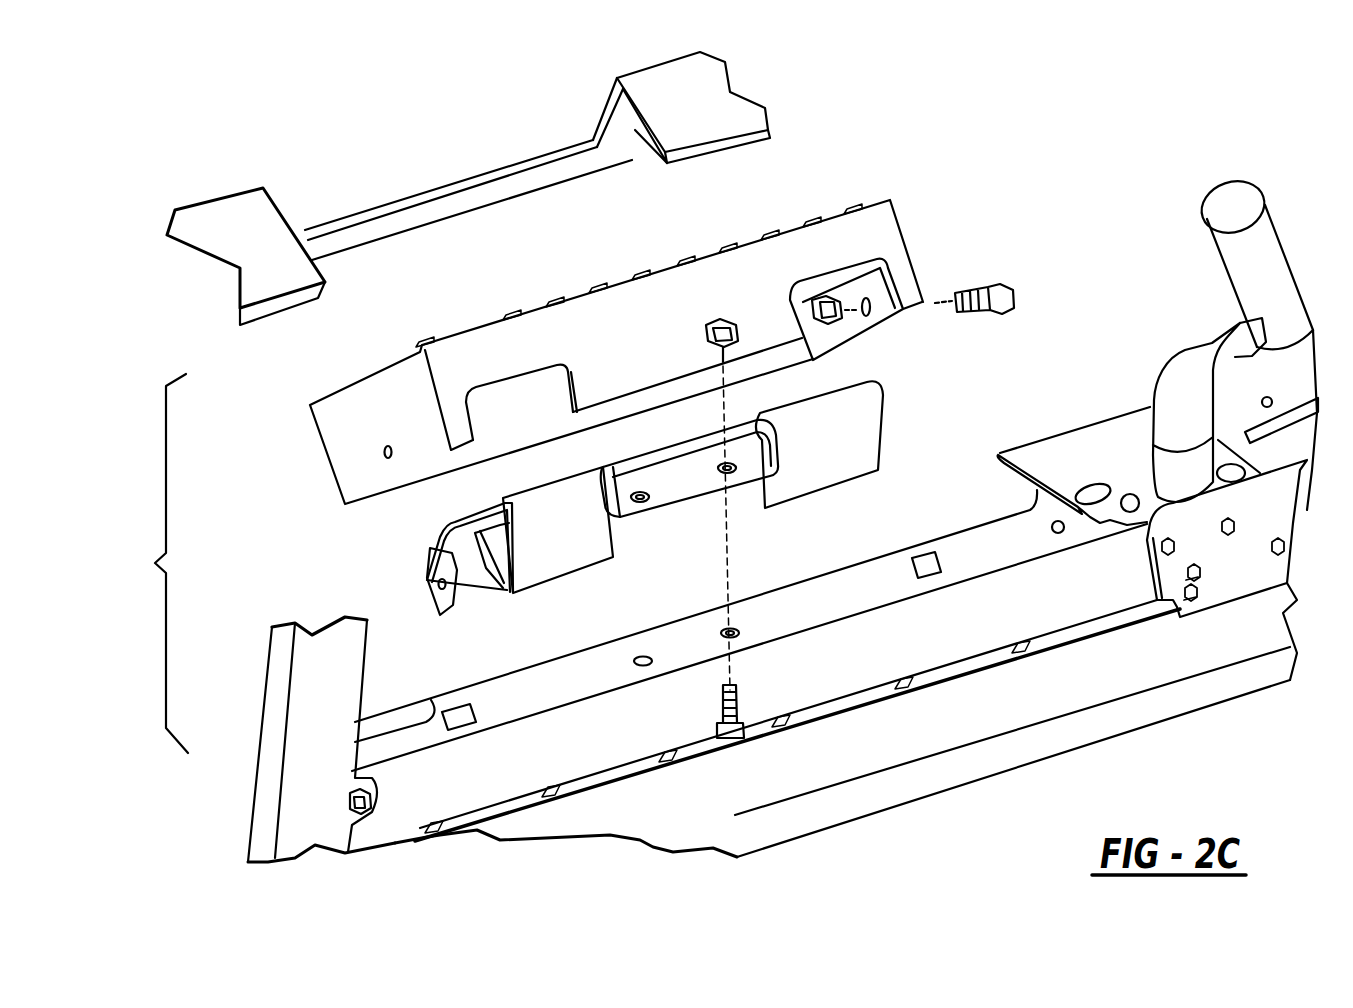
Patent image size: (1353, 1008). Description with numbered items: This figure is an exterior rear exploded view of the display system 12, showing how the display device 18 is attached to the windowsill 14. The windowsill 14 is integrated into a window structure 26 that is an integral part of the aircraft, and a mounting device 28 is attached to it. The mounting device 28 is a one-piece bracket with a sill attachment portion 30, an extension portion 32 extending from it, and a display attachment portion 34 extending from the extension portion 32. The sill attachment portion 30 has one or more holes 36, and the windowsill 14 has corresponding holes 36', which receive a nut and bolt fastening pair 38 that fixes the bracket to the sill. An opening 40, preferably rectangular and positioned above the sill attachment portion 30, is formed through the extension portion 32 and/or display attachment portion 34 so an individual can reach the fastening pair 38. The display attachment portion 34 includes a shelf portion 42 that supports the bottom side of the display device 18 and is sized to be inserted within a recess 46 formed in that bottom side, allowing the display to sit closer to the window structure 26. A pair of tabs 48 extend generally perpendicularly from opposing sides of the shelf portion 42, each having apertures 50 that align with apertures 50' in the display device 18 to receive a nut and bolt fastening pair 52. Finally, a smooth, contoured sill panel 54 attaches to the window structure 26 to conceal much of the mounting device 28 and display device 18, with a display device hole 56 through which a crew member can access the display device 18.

The display system 12 is at (152, 563).
The windowsill 14 is at (880, 587).
The display device 18 is at (400, 360).
The window structure 26 is at (275, 747).
The mounting device 28 is at (890, 410).
The sill attachment portion 30 is at (495, 545).
The extension portion 32 is at (555, 532).
The display attachment portion 34 is at (507, 503).
The holes 36 is at (725, 516).
The holes 36' is at (666, 768).
The nut and bolt fastening pair 38 is at (738, 708).
The opening 40 is at (774, 445).
The shelf portion 42 is at (683, 445).
The recess 46 is at (512, 384).
The tabs 48 is at (440, 610).
The apertures 50 is at (405, 599).
The apertures 50' is at (604, 395).
The nut and bolt fastening pair 52 is at (977, 284).
The sill panel 54 is at (623, 57).
The display device hole 56 is at (637, 130).